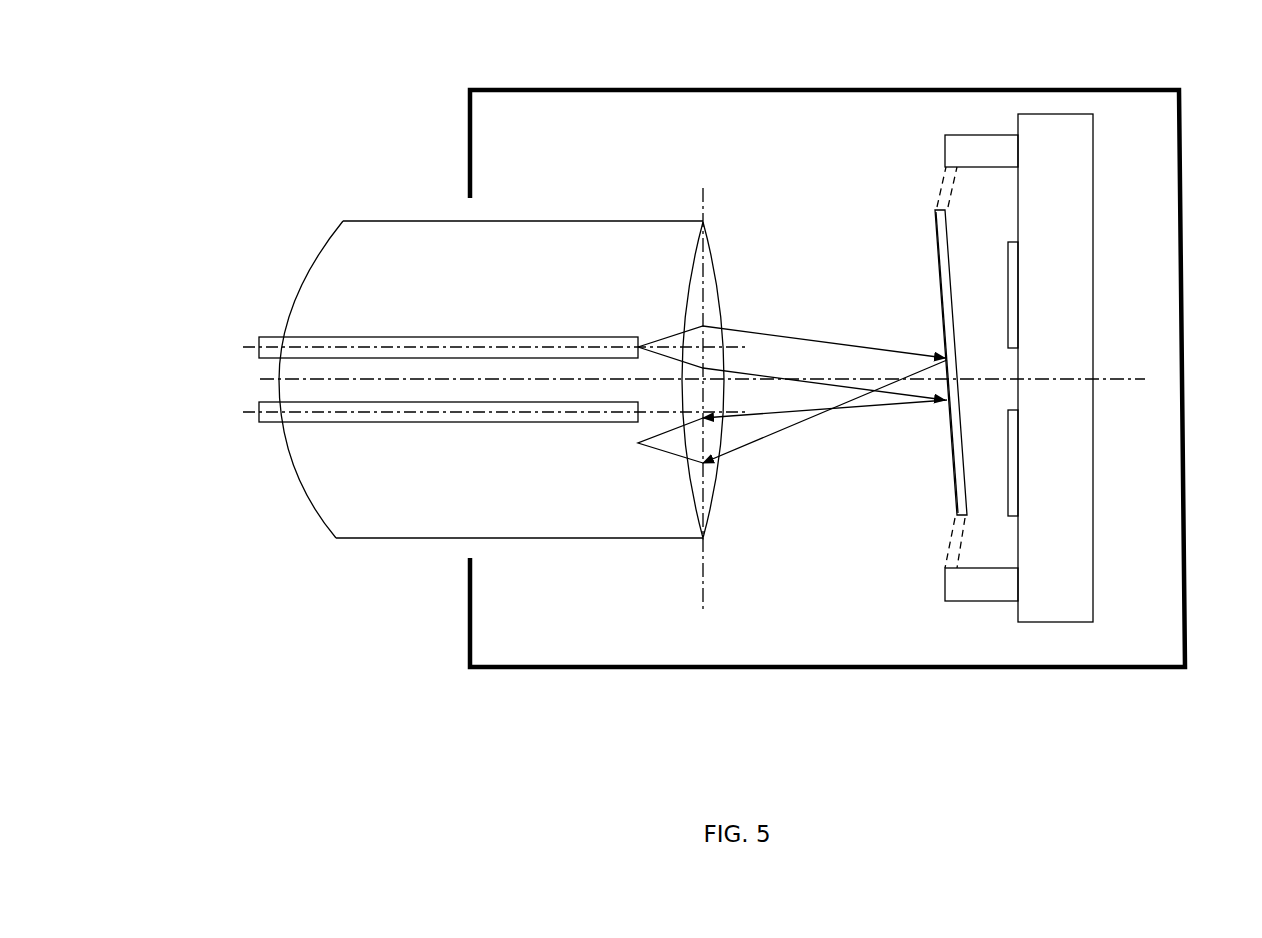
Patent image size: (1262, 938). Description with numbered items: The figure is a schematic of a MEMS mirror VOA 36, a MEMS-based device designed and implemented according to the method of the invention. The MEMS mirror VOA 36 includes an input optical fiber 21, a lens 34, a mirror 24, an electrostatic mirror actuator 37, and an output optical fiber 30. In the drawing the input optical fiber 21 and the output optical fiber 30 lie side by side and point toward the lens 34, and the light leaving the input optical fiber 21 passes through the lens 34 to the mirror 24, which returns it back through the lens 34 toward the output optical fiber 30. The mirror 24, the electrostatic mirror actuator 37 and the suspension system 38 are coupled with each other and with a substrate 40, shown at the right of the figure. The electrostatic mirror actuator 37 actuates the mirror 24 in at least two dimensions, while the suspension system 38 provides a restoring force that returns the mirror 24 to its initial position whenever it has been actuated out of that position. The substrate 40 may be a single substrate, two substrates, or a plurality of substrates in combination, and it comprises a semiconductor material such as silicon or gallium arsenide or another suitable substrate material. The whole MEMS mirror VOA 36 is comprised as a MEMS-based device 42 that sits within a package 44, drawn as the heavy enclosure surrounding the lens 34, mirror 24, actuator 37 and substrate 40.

The input optical fiber 21 is at (353, 337).
The mirror 24 is at (937, 230).
The output optical fiber 30 is at (405, 422).
The lens 34 is at (713, 248).
The MEMS mirror VOA 36 is at (290, 123).
The electrostatic mirror actuator 37 is at (1020, 295).
The suspension system 38 is at (937, 207).
The substrate 40 is at (1062, 622).
The MEMS-based device 42 is at (395, 115).
The package 44 is at (703, 669).